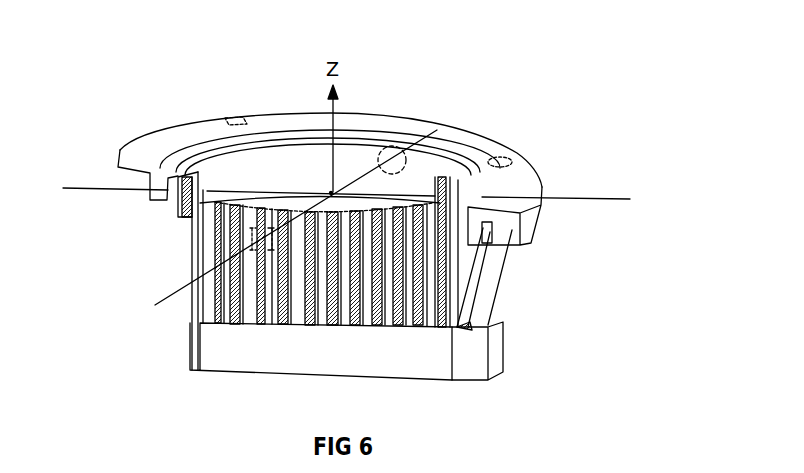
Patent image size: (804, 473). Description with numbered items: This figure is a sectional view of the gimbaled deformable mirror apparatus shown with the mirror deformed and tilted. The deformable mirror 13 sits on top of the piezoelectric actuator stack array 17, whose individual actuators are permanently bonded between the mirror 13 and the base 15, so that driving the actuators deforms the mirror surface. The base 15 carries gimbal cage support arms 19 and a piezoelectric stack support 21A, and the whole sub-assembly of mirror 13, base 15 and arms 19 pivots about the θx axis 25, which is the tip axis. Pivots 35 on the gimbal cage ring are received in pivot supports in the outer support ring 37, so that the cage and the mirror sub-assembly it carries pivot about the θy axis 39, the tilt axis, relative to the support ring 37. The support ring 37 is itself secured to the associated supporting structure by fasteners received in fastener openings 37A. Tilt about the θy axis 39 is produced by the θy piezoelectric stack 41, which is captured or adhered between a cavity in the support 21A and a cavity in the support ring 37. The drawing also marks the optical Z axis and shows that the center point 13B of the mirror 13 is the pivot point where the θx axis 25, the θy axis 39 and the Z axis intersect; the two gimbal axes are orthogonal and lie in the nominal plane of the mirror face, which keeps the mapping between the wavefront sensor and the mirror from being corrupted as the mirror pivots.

The deformable mirror 13 is at (420, 190).
The center point 13B is at (330, 193).
The base 15 is at (320, 355).
The piezoelectric actuator stack array 17 is at (270, 308).
The gimbal cage support arms 19 is at (197, 225).
The piezoelectric stack support 21A is at (500, 357).
The θx axis 25 is at (66, 188).
The pivots 35 is at (393, 147).
The support ring 37 is at (363, 125).
The fastener openings 37A is at (247, 125).
The θy axis 39 is at (437, 130).
The θy piezoelectric stack 41 is at (492, 273).